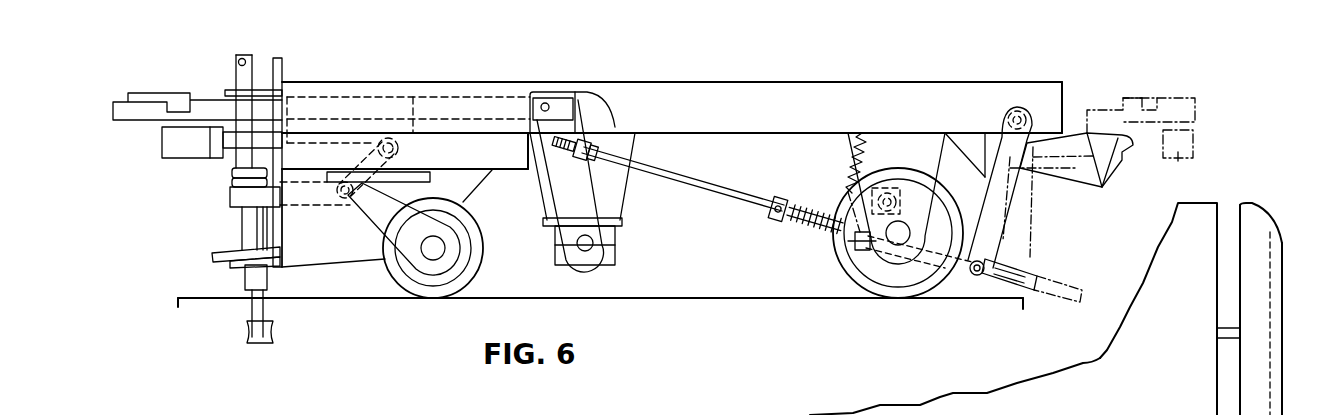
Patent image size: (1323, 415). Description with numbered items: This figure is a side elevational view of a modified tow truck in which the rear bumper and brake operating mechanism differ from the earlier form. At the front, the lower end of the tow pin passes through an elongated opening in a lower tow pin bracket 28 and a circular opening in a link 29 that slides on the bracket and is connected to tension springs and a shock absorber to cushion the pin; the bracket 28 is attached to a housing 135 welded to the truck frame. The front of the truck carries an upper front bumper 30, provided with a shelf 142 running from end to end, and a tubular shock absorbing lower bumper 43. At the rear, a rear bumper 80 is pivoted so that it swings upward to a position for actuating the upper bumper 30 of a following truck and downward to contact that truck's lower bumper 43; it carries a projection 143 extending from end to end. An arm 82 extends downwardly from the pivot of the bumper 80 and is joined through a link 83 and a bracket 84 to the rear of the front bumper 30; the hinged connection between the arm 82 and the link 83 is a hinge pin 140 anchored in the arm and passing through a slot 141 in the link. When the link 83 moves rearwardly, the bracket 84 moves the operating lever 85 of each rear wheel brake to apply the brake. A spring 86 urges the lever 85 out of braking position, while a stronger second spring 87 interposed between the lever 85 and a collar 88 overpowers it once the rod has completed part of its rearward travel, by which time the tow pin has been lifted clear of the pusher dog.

The lower tow pin bracket 28 is at (223, 253).
The link 29 is at (270, 263).
The upper front bumper 30 is at (148, 93).
The lower bumper 43 is at (172, 152).
The rear bumper 80 is at (1102, 187).
The arm 82 is at (1000, 225).
The link 83 is at (700, 187).
The bracket 84 is at (585, 122).
The operating lever 85 is at (848, 200).
The spring 86 is at (862, 157).
The second spring 87 is at (792, 226).
The collar 88 is at (787, 200).
The housing 135 is at (338, 263).
The hinge pin 140 is at (972, 277).
The slot 141 is at (1003, 287).
The shelf 142 is at (122, 100).
The projection 143 is at (1282, 238).